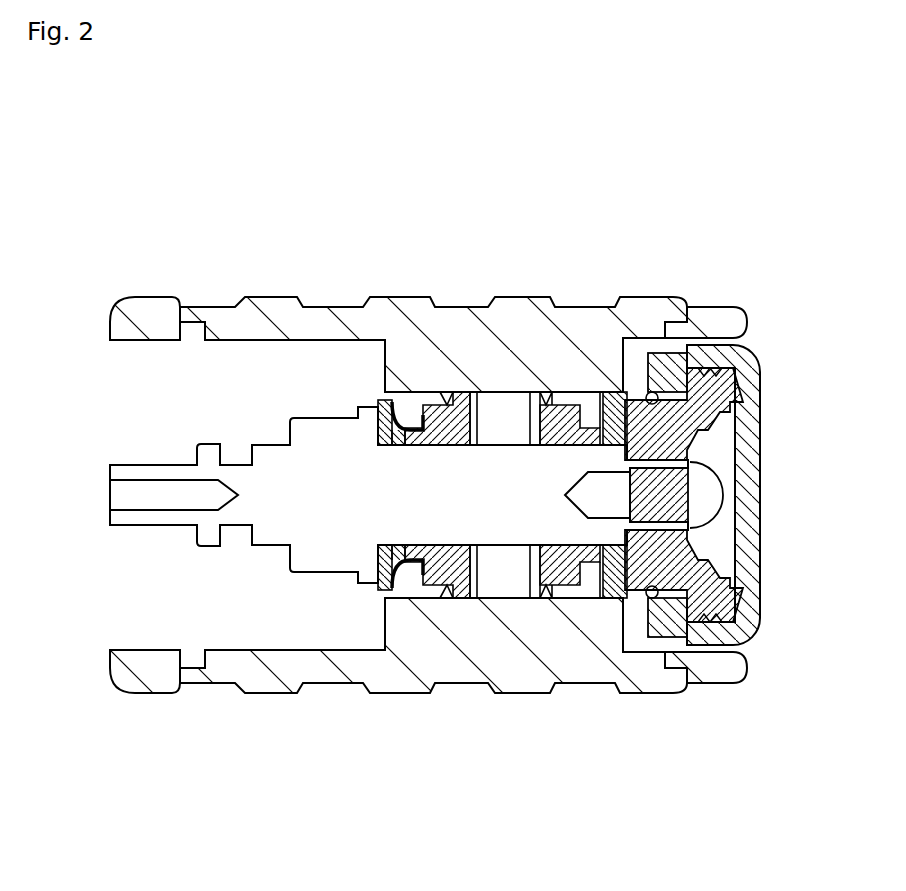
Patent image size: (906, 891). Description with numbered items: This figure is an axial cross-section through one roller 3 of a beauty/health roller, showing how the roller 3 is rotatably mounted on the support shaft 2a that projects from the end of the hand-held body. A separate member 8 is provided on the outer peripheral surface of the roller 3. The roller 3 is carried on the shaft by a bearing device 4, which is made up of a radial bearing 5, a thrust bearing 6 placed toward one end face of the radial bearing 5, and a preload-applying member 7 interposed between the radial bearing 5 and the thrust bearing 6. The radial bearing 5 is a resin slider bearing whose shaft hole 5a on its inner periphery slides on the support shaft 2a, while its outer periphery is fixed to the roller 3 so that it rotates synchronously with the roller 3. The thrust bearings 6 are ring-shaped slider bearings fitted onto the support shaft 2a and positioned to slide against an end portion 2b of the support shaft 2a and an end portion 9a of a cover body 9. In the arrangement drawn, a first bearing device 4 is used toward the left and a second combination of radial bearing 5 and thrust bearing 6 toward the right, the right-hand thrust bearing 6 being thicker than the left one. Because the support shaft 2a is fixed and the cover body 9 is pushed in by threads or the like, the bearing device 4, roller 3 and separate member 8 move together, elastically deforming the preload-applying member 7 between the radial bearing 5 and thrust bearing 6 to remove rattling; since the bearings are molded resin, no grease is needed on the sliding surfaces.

The support shaft 2a is at (265, 520).
The end portion of the support shaft 2b is at (377, 566).
The roller 3 is at (152, 308).
The bearing device 4 is at (488, 462).
The radial bearing 5 is at (450, 425).
The shaft hole 5a is at (458, 532).
The thrust bearing 6 is at (383, 420).
The preload-applying member 7 is at (410, 412).
The separate member 8 is at (280, 310).
The cover body 9 is at (745, 645).
The end portion of the cover body 9a is at (628, 600).